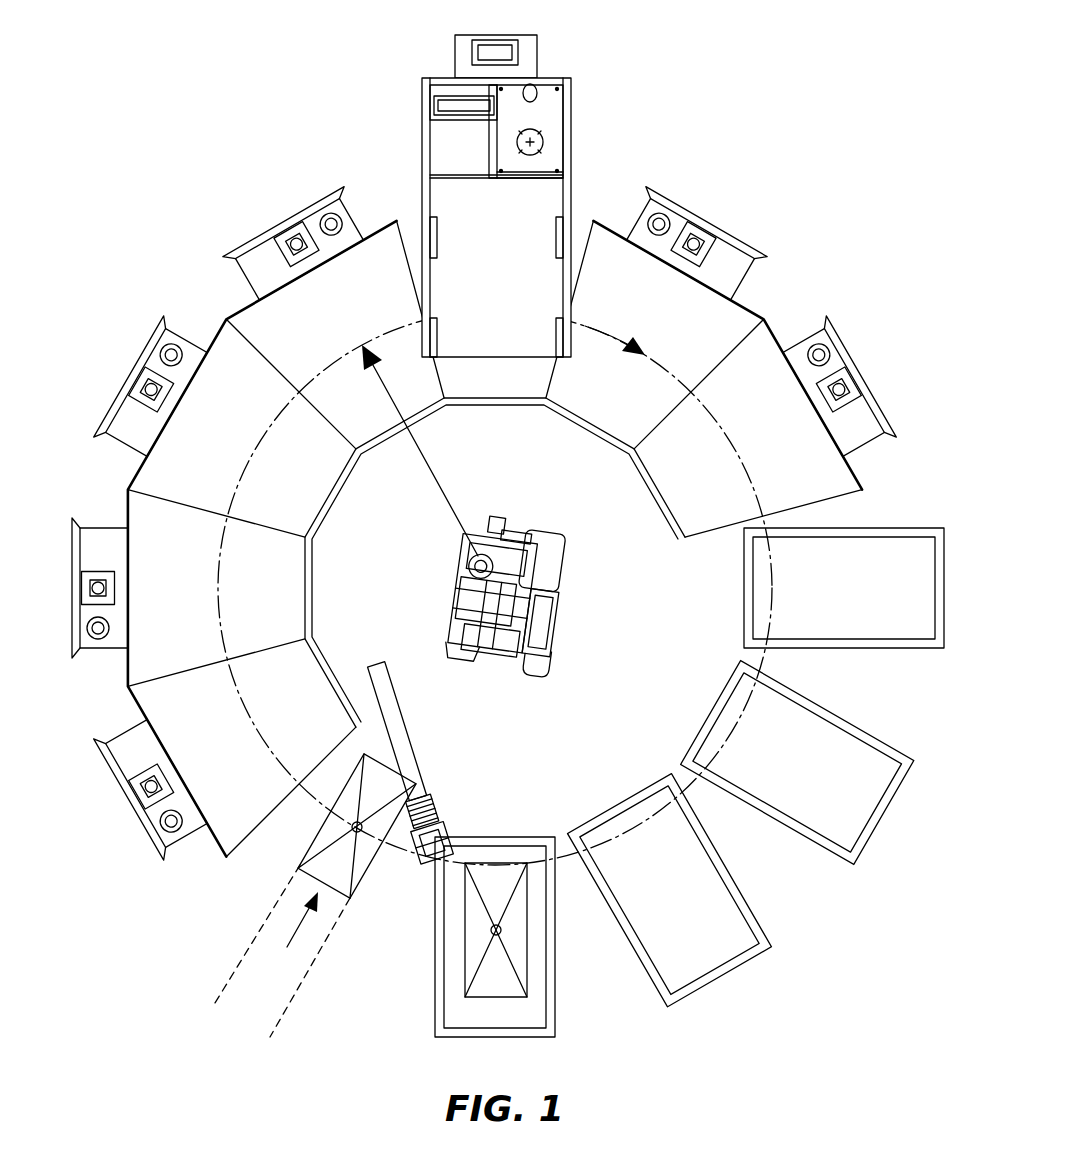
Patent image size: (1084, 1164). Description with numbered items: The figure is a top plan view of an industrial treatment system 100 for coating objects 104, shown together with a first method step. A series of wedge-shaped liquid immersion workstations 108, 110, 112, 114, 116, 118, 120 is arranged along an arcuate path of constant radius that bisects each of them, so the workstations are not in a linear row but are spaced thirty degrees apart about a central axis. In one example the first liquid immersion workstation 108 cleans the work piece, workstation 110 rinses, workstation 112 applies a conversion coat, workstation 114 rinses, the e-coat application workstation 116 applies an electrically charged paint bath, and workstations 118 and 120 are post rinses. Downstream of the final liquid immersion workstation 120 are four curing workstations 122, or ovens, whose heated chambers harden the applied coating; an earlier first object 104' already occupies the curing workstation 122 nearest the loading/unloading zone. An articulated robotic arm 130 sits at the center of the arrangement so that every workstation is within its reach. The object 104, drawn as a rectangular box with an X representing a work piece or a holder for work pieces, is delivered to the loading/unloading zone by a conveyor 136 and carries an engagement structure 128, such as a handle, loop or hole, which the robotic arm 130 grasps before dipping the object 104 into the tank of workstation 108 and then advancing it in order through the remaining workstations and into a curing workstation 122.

The industrial treatment system 100 is at (776, 128).
The object 104 is at (313, 828).
The first object 104' is at (441, 930).
The first liquid immersion workstation 108 is at (207, 738).
The workstation 110 is at (185, 603).
The workstation 112 is at (235, 415).
The workstation 114 is at (327, 307).
The e-coat application workstation 116 is at (481, 218).
The workstation 118 is at (695, 317).
The final liquid immersion workstation 120 is at (753, 397).
The curing workstation 122 is at (882, 576).
The engagement structure 128 is at (352, 827).
The articulated robotic arm 130 is at (580, 637).
The conveyor 136 is at (240, 960).